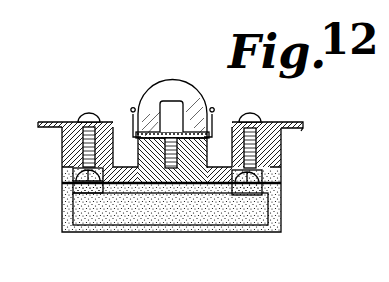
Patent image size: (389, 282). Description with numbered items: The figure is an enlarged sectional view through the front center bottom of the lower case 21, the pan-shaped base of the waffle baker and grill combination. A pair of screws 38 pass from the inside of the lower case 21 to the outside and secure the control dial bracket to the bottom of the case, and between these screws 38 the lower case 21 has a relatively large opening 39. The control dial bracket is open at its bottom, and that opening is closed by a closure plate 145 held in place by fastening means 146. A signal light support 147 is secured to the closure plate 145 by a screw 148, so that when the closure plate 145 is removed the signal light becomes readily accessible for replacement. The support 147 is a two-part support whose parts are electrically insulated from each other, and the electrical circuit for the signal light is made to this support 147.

The lower case 21 is at (294, 127).
The screws 38 is at (86, 118).
The opening 39 is at (124, 117).
The closure plate 145 is at (166, 171).
The fastening means 146 is at (72, 193).
The signal light support 147 is at (172, 82).
The screw 148 is at (166, 127).